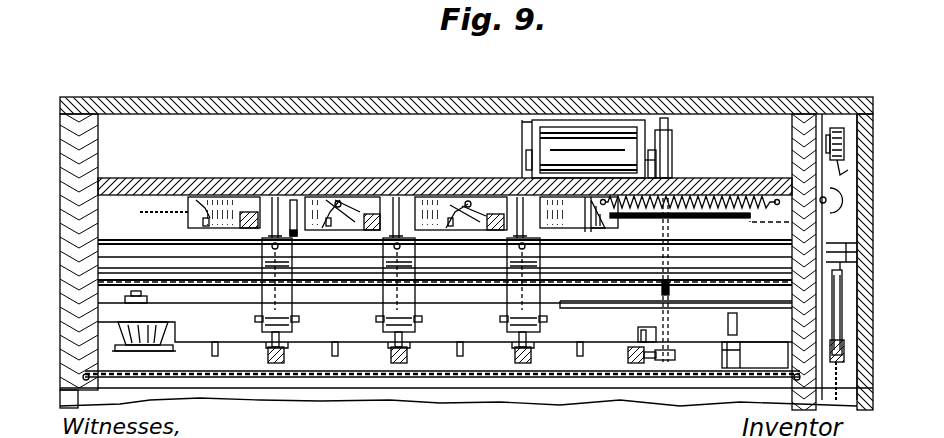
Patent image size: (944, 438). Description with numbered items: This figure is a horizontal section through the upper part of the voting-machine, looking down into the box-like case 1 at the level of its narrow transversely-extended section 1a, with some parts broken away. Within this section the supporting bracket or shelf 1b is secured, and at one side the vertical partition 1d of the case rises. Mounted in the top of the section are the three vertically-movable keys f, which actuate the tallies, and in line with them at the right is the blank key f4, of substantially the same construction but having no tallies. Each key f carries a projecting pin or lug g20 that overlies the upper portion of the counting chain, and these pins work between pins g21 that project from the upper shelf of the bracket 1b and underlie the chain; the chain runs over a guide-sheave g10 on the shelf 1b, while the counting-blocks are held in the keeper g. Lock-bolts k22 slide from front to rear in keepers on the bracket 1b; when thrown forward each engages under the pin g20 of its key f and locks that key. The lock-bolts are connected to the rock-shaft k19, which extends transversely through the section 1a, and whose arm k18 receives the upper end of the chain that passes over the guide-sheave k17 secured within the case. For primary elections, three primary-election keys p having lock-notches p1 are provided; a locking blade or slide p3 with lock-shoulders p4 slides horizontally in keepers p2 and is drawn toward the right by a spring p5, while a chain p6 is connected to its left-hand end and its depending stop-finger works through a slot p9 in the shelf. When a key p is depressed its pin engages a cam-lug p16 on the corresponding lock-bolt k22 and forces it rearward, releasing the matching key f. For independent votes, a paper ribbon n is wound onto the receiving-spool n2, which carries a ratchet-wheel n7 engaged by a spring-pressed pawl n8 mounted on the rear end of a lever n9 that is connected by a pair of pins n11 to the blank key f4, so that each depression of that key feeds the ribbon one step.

The box-like case 1 is at (433, 396).
The transversely-extended section 1a is at (180, 106).
The supporting bracket or shelf 1b is at (308, 318).
The vertical partition 1d is at (814, 115).
The paper ribbon n is at (586, 140).
The receiving-spool n2 is at (531, 148).
The ratchet-wheel n7 is at (673, 158).
The spring-pressed pawl n8 is at (668, 126).
The lever n9 is at (670, 292).
The pins n11 is at (670, 352).
The primary-election keys p is at (236, 242).
The lock-notches p1 is at (384, 206).
The keepers p2 is at (190, 224).
The locking blade or slide p3 is at (464, 214).
The lock-shoulders p4 is at (440, 212).
The spring p5 is at (726, 212).
The chain p6 is at (556, 210).
The slot p9 is at (748, 220).
The cam-lugs p16 is at (294, 200).
The rock-shaft k19 is at (122, 258).
The lock-bolts k22 is at (296, 248).
The arm k18 is at (838, 195).
The guide-sheave k17 is at (845, 331).
The keeper g is at (746, 364).
The guide-sheave g10 is at (168, 340).
The projecting pin or lug g20 is at (290, 344).
The pins g21 is at (218, 350).
The keys f is at (412, 352).
The blank key f4 is at (628, 346).